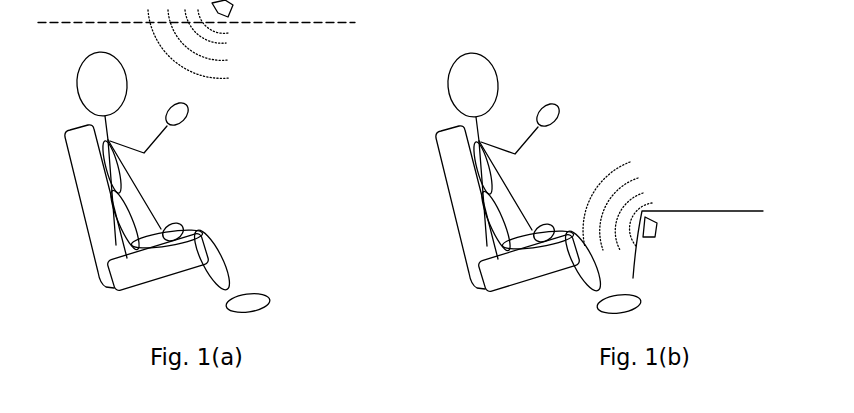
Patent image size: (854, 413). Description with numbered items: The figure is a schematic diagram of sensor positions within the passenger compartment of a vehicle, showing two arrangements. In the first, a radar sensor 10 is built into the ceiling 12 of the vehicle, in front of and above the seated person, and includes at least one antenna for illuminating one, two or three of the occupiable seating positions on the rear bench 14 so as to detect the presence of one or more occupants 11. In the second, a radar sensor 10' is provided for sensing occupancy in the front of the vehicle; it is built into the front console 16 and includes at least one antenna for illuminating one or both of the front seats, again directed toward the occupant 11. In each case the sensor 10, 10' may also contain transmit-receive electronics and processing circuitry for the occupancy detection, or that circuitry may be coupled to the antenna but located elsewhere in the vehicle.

In FIG. 1A, the radar sensor 10 is at (257, 46).
In FIG. 1B, the radar sensor 10' is at (674, 249).
In FIG. 1A, the occupant 11 is at (157, 138).
In FIG. 1B, the occupant 11 is at (495, 97).
In FIG. 1A, the ceiling 12 is at (285, 13).
In FIG. 1A, the rear bench 14 is at (126, 283).
In FIG. 1B, the front console 16 is at (707, 210).